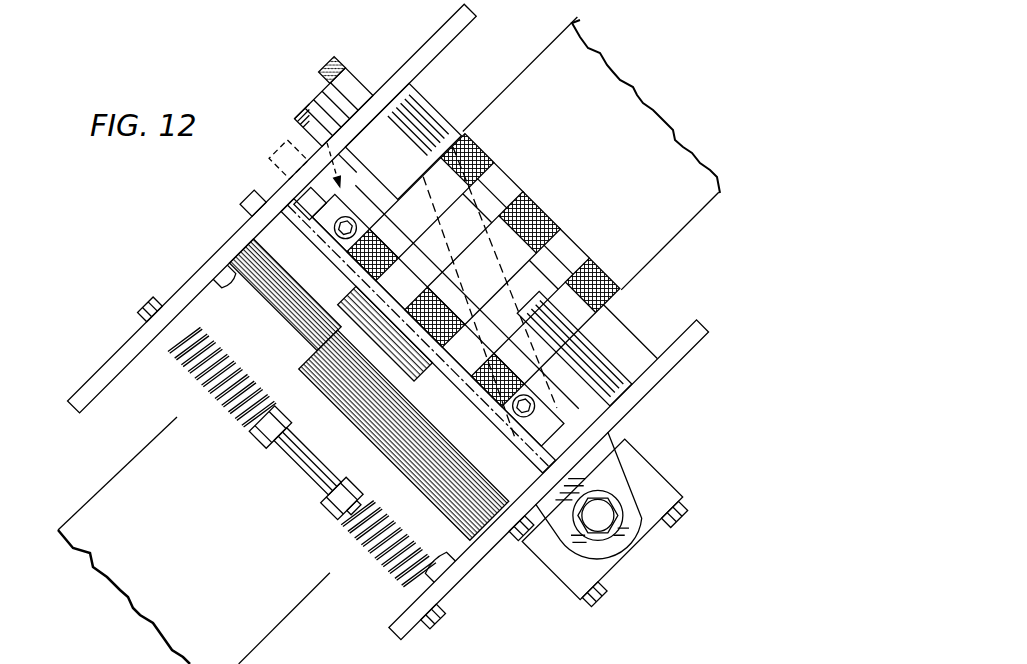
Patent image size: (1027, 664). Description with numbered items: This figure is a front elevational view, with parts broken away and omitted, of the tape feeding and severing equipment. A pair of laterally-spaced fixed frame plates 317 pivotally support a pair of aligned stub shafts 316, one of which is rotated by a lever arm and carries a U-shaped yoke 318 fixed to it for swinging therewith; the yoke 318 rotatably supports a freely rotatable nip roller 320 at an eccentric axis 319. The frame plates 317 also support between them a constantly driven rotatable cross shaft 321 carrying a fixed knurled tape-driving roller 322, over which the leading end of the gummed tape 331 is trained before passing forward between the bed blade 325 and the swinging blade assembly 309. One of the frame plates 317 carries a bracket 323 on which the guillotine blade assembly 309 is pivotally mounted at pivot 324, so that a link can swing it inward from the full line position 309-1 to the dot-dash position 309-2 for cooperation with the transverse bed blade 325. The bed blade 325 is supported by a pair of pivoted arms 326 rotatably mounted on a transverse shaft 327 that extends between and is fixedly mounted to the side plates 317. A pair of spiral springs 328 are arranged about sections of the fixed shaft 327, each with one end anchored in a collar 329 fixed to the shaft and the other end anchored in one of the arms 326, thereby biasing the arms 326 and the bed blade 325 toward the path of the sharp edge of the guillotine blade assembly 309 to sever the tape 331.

The guillotine blade assembly 309 is at (603, 470).
The full line position of the guillotine blade assembly 309-1 is at (458, 98).
The dot-dash position of the guillotine blade assembly 309-2 is at (323, 125).
The stub shafts 316 is at (247, 210).
The frame plates 317 is at (170, 297).
The U-shaped yoke 318 is at (313, 343).
The eccentric axis 319 is at (397, 398).
The nip roller 320 is at (438, 425).
The cross shaft 321 is at (593, 342).
The knurled tape-driving roller 322 is at (603, 263).
The bracket 323 is at (572, 583).
The pivot 324 is at (597, 520).
The bed blade 325 is at (337, 212).
The pivoted arms 326 is at (228, 282).
The transverse shaft 327 is at (293, 473).
The spiral springs 328 is at (193, 382).
The collar 329 is at (240, 440).
The gummed tape 331 is at (627, 123).